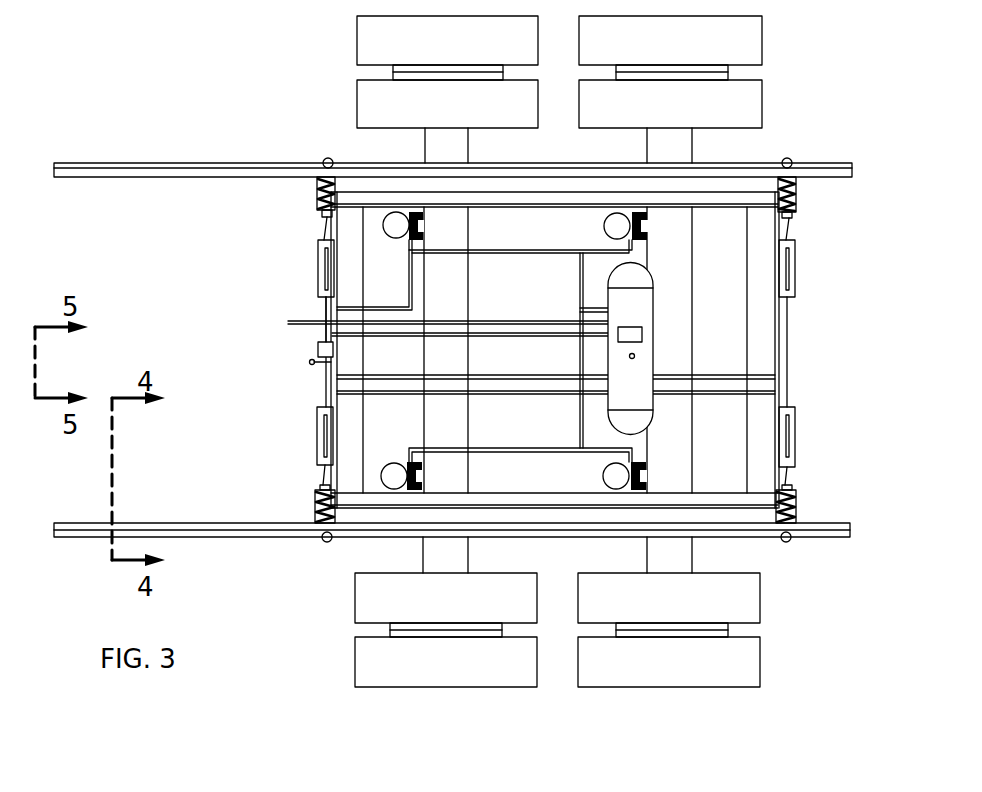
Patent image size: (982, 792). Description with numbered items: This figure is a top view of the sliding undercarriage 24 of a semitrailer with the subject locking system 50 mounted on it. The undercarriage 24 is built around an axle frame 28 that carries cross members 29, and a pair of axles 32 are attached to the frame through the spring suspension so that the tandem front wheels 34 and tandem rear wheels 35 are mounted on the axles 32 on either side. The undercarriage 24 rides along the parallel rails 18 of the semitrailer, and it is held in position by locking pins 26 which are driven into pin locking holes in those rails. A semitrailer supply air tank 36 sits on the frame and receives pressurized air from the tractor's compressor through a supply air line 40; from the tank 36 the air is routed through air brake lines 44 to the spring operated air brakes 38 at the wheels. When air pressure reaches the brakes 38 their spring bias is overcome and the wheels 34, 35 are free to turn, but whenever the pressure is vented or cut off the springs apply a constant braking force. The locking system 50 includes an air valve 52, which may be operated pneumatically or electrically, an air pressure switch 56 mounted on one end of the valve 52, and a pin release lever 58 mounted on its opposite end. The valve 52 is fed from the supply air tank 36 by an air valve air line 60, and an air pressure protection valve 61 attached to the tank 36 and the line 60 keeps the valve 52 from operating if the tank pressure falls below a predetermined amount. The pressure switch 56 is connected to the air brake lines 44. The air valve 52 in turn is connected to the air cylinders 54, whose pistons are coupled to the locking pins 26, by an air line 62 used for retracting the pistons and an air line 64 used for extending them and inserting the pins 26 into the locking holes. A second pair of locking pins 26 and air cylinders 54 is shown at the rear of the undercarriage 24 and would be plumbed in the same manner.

The parallel rails 18 is at (280, 537).
The sliding undercarriage 24 is at (843, 140).
The locking pins 26 is at (320, 212).
The axle frame 28 is at (797, 193).
The cross members 29 is at (366, 348).
The axles 32 is at (694, 250).
The tandem front wheels 34 is at (357, 17).
The tandem rear wheels 35 is at (762, 100).
The semitrailer supply air tank 36 is at (655, 306).
The spring operated air brakes 38 is at (393, 228).
The supply air line 40 is at (328, 320).
The air brake lines 44 is at (578, 250).
The locking system 50 is at (210, 459).
The air valve 52 is at (318, 351).
The air cylinders 54 is at (318, 262).
The air pressure switch 56 is at (318, 346).
The pin release lever 58 is at (310, 362).
The air valve air line 60 is at (330, 334).
The air pressure protection valve 61 is at (655, 334).
The air line 62 is at (320, 466).
The air line 64 is at (330, 393).